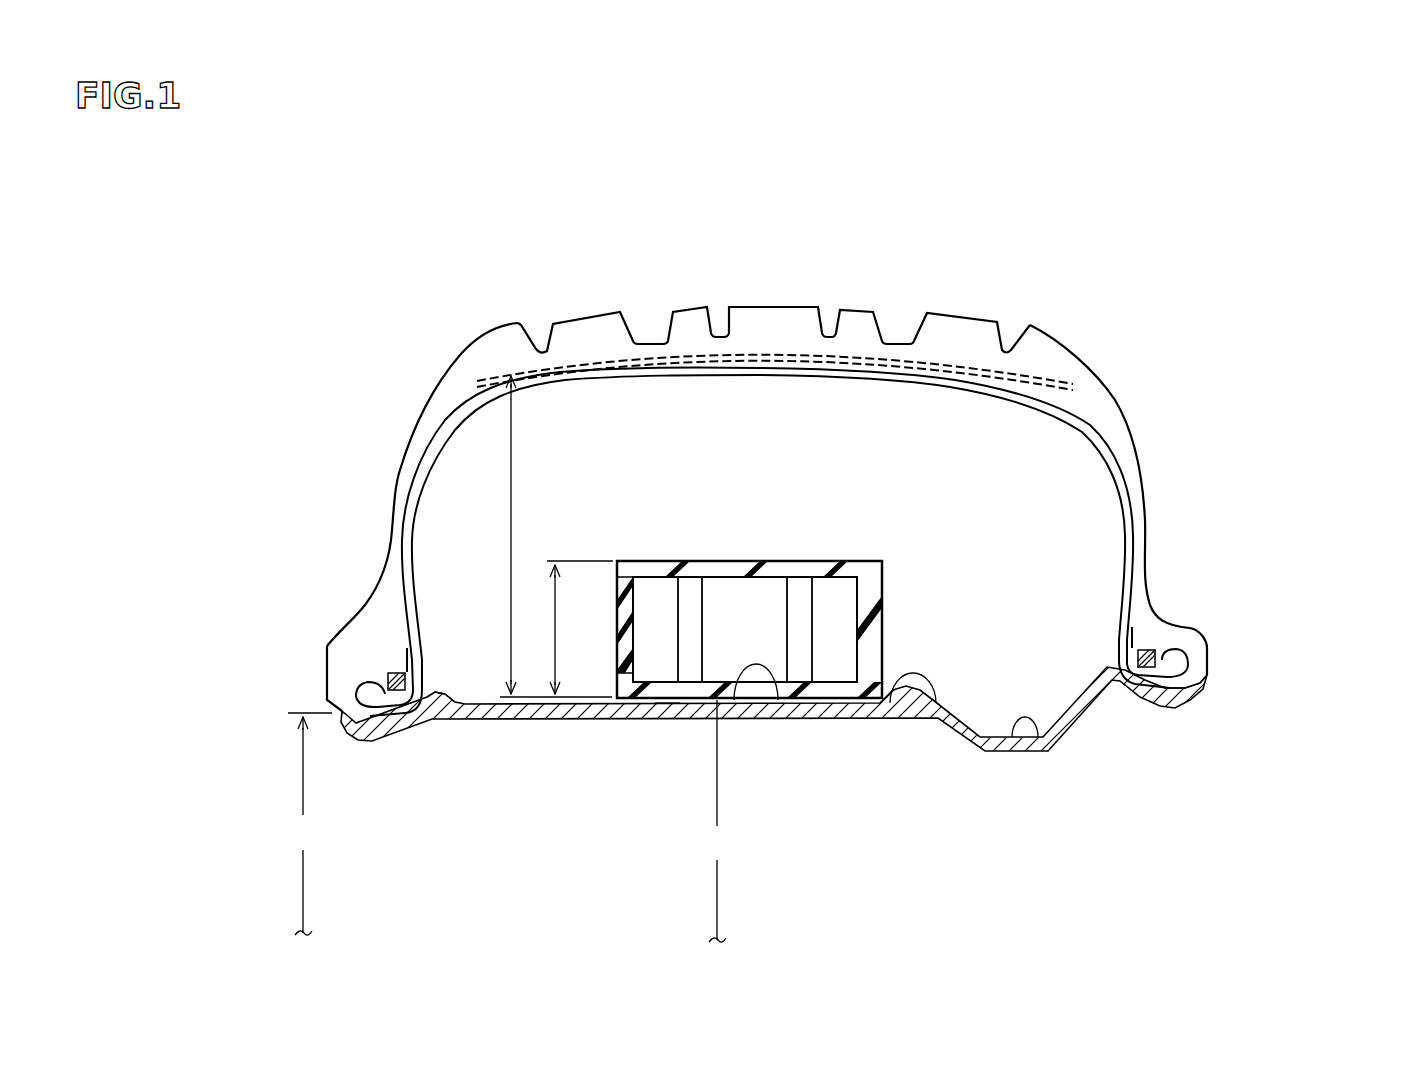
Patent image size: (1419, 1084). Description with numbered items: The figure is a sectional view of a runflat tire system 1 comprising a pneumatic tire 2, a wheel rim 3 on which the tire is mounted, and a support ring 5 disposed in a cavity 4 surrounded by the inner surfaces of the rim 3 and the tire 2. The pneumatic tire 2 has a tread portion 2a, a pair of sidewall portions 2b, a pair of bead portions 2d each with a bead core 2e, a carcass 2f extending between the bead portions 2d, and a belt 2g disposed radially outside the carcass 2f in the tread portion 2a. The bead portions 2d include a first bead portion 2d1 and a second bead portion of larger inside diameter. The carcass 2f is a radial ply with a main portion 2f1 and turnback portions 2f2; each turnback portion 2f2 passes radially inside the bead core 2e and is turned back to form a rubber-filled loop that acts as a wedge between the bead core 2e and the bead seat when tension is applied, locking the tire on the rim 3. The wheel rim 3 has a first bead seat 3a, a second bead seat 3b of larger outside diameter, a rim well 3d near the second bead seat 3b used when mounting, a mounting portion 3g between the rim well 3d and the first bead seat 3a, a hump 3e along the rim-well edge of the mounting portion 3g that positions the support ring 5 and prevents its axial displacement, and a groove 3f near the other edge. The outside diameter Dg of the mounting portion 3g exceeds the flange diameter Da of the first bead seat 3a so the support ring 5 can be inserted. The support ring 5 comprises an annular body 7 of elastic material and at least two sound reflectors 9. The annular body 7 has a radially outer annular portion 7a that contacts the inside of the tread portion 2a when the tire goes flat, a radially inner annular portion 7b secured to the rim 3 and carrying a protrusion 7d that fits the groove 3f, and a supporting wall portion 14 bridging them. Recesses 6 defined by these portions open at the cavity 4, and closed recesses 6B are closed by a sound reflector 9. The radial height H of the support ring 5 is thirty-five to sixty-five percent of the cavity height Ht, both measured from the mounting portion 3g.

The runflat tire system 1 is at (889, 216).
The pneumatic tire 2 is at (690, 292).
The tread portion 2a is at (778, 300).
The sidewall portion 2b is at (385, 480).
The bead portion 2d is at (320, 672).
The first bead portion 2d1 is at (334, 678).
The bead core 2e is at (388, 672).
The carcass 2f is at (1097, 433).
The main portion 2f1 is at (432, 452).
The turnback portion 2f2 is at (350, 676).
The belt 2g is at (1051, 374).
The wheel rim 3 is at (548, 733).
The first bead seat 3a is at (401, 722).
The second bead seat 3b is at (1147, 700).
The rim well 3d is at (1040, 752).
The hump 3e is at (927, 705).
The groove 3f is at (662, 704).
The mounting portion 3g is at (774, 702).
The cavity 4 is at (994, 500).
The support ring 5 is at (697, 560).
The recess 6 is at (733, 607).
The closed recess 6B is at (745, 629).
The annular body 7 is at (846, 562).
The radially outer annular portion 7a is at (787, 605).
The radially inner annular portion 7b is at (835, 692).
The protrusion 7d is at (650, 702).
The sound reflector 9 is at (638, 603).
The supporting wall portion 14 is at (878, 650).